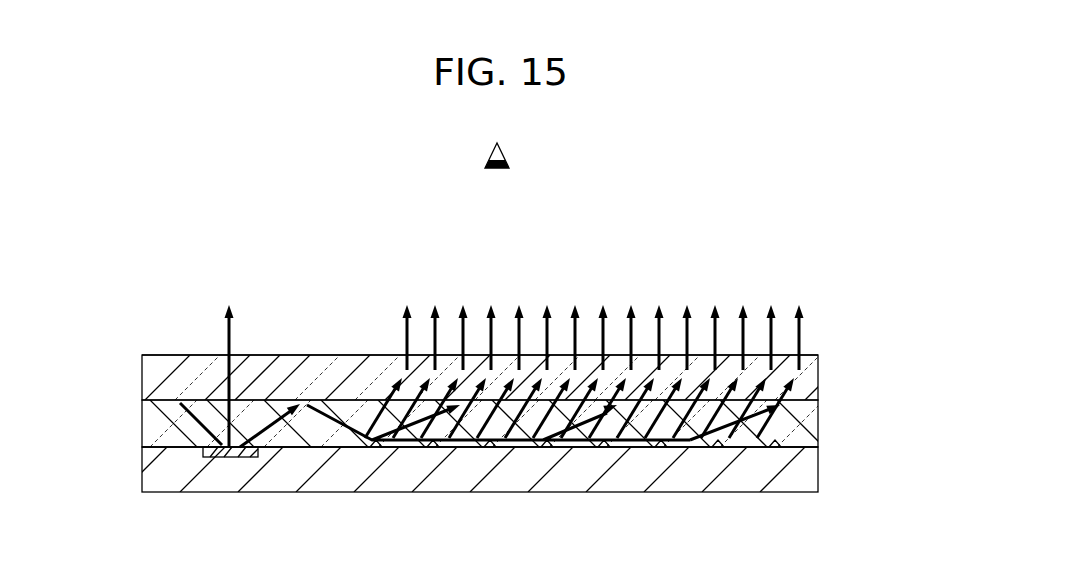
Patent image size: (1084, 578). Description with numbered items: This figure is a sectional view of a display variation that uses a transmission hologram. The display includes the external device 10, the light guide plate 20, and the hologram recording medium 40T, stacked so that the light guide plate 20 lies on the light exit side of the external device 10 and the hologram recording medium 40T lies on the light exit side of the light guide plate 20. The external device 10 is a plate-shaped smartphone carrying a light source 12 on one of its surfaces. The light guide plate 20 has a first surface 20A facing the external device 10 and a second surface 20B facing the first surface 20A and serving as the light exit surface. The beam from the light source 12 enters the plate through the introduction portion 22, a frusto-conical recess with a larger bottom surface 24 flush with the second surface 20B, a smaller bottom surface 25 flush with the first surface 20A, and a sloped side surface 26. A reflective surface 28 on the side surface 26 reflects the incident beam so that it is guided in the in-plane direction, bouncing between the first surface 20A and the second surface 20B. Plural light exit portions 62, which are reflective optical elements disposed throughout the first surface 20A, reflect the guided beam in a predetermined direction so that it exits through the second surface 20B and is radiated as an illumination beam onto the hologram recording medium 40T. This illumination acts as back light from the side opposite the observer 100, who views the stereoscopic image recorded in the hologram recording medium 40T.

The observer 100 is at (509, 157).
The external device 10 is at (815, 474).
The light guide plate 20 is at (812, 430).
The first surface 20A is at (802, 452).
The second surface 20B is at (802, 400).
The hologram recording medium 40T is at (812, 370).
The light exit portions 62 is at (572, 447).
The bottom surface 25 is at (214, 457).
The bottom surface 24 is at (198, 398).
The light source 12 is at (247, 463).
The introduction portion 22 is at (258, 388).
The reflective surface 28 is at (511, 467).
The side surface 26 is at (293, 412).